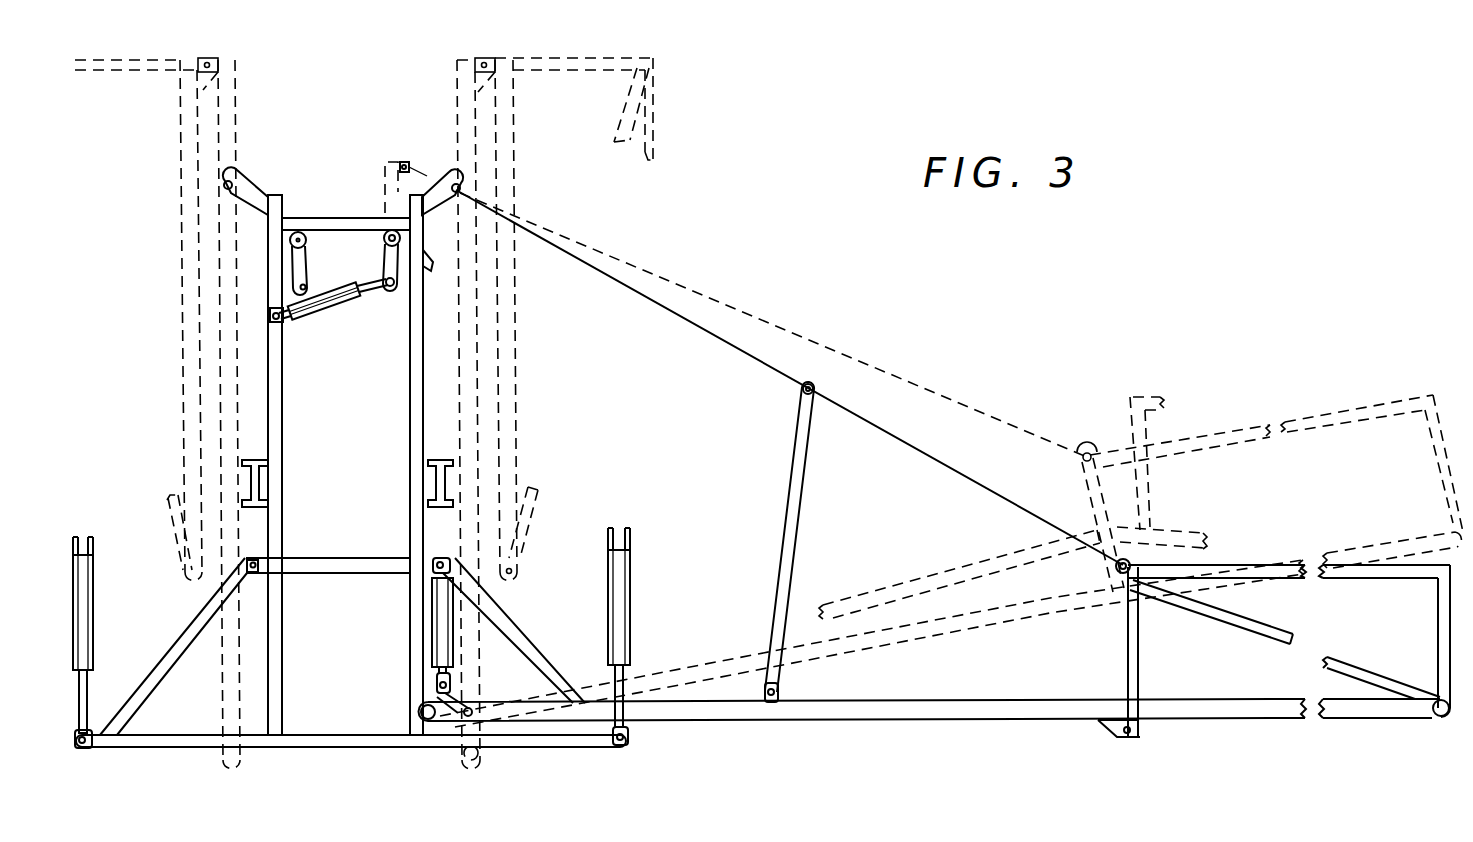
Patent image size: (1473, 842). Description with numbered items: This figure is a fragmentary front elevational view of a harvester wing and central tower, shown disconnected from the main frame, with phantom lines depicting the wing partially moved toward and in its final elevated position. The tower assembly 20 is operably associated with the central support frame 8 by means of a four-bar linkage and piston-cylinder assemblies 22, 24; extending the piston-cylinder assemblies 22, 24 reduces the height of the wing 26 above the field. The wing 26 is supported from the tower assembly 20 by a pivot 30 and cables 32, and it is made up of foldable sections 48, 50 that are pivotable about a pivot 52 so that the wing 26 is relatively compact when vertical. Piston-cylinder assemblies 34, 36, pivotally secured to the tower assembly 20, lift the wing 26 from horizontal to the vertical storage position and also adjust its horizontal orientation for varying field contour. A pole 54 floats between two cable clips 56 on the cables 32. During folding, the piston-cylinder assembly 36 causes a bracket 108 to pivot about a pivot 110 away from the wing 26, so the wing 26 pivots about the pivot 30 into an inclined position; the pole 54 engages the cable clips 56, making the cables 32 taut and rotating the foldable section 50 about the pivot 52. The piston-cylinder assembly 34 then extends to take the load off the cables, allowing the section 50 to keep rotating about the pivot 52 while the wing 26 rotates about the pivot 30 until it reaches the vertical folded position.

The central support frame 8 is at (262, 486).
The tower assembly 20 is at (408, 368).
The piston-cylinder assembly 22 is at (625, 603).
The piston-cylinder assembly 24 is at (88, 583).
The wing 26 is at (522, 384).
The pivot 30 is at (470, 708).
The cables 32 is at (680, 318).
The piston-cylinder assembly 34 is at (440, 618).
The piston-cylinder assembly 36 is at (320, 304).
The foldable section 48 is at (1020, 705).
The foldable section 50 is at (1253, 710).
The pivot 52 is at (1138, 737).
The pole 54 is at (787, 568).
The cable clips 56 is at (768, 363).
The bracket 108 is at (450, 185).
The pivot 110 is at (375, 218).